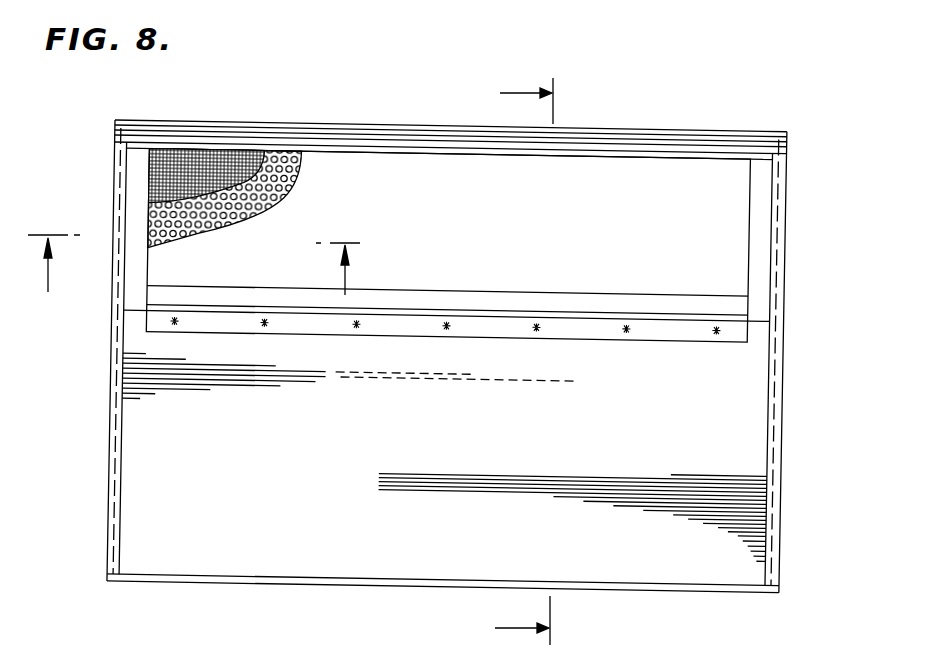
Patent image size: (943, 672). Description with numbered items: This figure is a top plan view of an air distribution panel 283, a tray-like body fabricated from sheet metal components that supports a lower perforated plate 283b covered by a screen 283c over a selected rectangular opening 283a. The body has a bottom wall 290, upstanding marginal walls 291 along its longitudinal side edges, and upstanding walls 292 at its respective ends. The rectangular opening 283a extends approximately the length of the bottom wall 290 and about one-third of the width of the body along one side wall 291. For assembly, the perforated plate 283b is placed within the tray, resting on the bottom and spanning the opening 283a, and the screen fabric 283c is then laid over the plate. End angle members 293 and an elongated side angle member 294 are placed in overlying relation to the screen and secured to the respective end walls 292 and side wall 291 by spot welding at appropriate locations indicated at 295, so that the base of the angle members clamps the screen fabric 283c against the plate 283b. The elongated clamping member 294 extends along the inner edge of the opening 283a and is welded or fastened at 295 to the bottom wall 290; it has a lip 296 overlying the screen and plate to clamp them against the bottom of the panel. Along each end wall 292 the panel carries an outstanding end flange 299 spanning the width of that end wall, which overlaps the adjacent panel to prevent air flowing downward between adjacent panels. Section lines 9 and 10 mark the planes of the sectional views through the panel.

The bottom wall 290 is at (443, 457).
The end flange 299 is at (114, 412).
The upstanding marginal wall 291 is at (578, 130).
The upstanding end wall 292 is at (127, 516).
The end angle member 293 is at (130, 187).
The air distribution panel 283 is at (320, 586).
The rectangular opening 283a is at (682, 163).
The perforated plate 283b is at (298, 200).
The screen 283c is at (232, 160).
The side angle member 294 is at (408, 140).
The spot welds 295 is at (690, 368).
The lip 296 is at (528, 296).
The section line 9- 9 is at (511, 364).
The section line 10- 10 is at (200, 266).